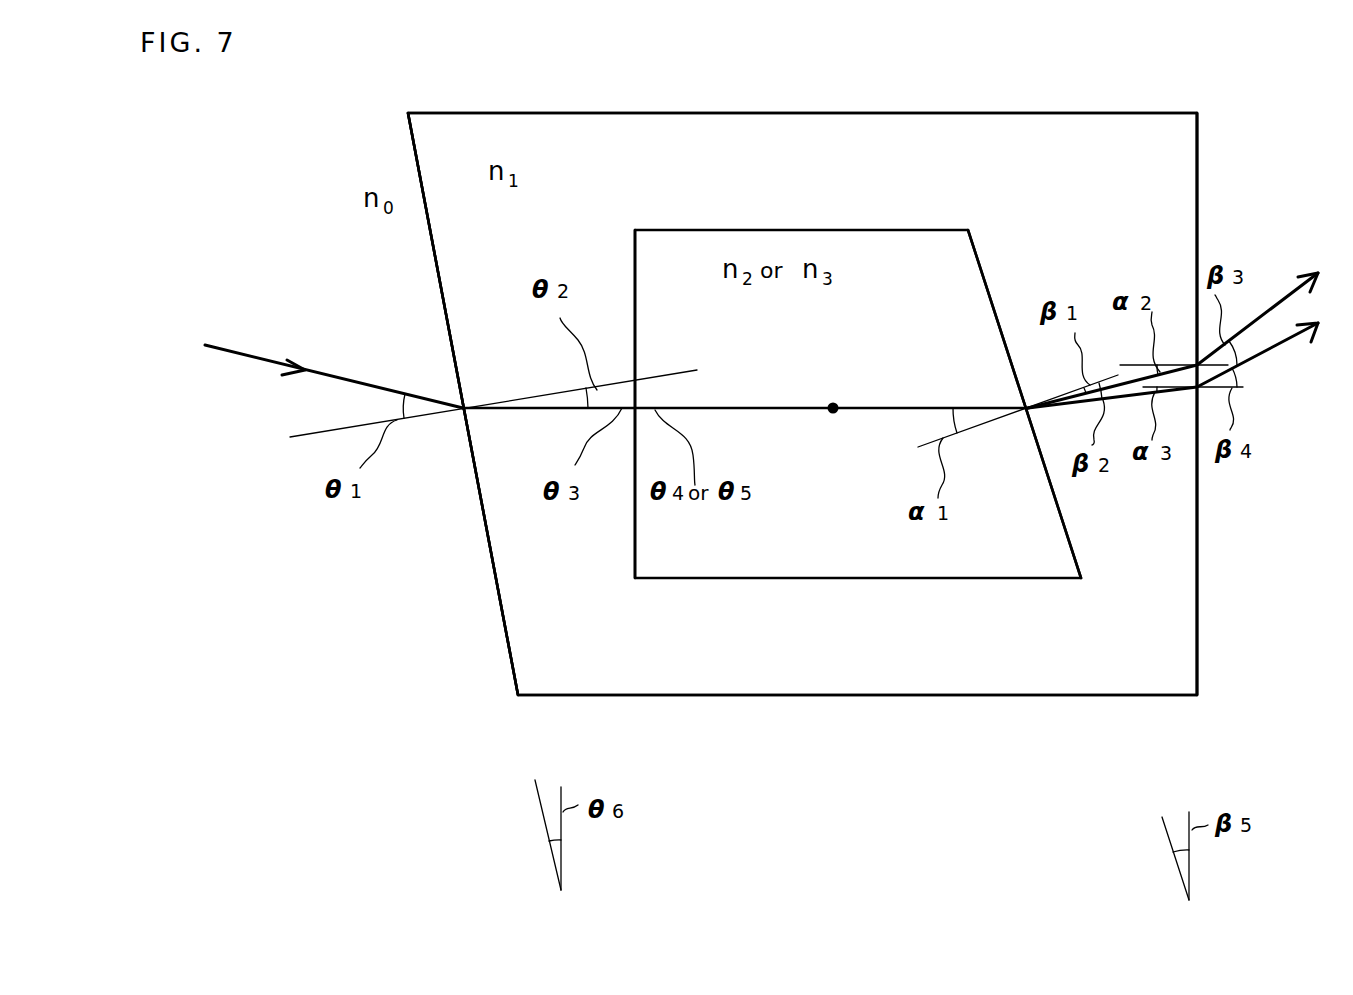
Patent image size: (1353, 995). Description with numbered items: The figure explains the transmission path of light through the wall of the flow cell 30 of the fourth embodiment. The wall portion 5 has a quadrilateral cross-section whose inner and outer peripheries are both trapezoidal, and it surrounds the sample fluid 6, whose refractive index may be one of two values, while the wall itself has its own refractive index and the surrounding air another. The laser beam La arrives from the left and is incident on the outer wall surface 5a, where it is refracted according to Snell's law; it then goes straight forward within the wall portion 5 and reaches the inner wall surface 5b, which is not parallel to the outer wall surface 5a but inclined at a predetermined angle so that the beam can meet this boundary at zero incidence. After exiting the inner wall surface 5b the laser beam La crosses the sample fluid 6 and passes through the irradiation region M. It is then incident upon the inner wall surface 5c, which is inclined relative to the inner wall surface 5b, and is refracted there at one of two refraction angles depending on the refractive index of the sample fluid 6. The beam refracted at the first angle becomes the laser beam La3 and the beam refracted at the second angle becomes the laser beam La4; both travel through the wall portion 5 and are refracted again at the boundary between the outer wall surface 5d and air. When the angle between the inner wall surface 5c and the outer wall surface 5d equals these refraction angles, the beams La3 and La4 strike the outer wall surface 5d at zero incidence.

The flow cell 30 is at (815, 88).
The wall portion 5 is at (915, 132).
The sample fluid 6 is at (955, 256).
The outer wall surface 5a is at (490, 557).
The inner wall surface 5b is at (636, 522).
The inner wall surface 5c is at (1060, 518).
The outer wall surface 5d is at (1197, 578).
The irradiation region M is at (833, 414).
The laser beam La is at (247, 357).
The laser beam La3 is at (1288, 292).
The laser beam La4 is at (1297, 338).